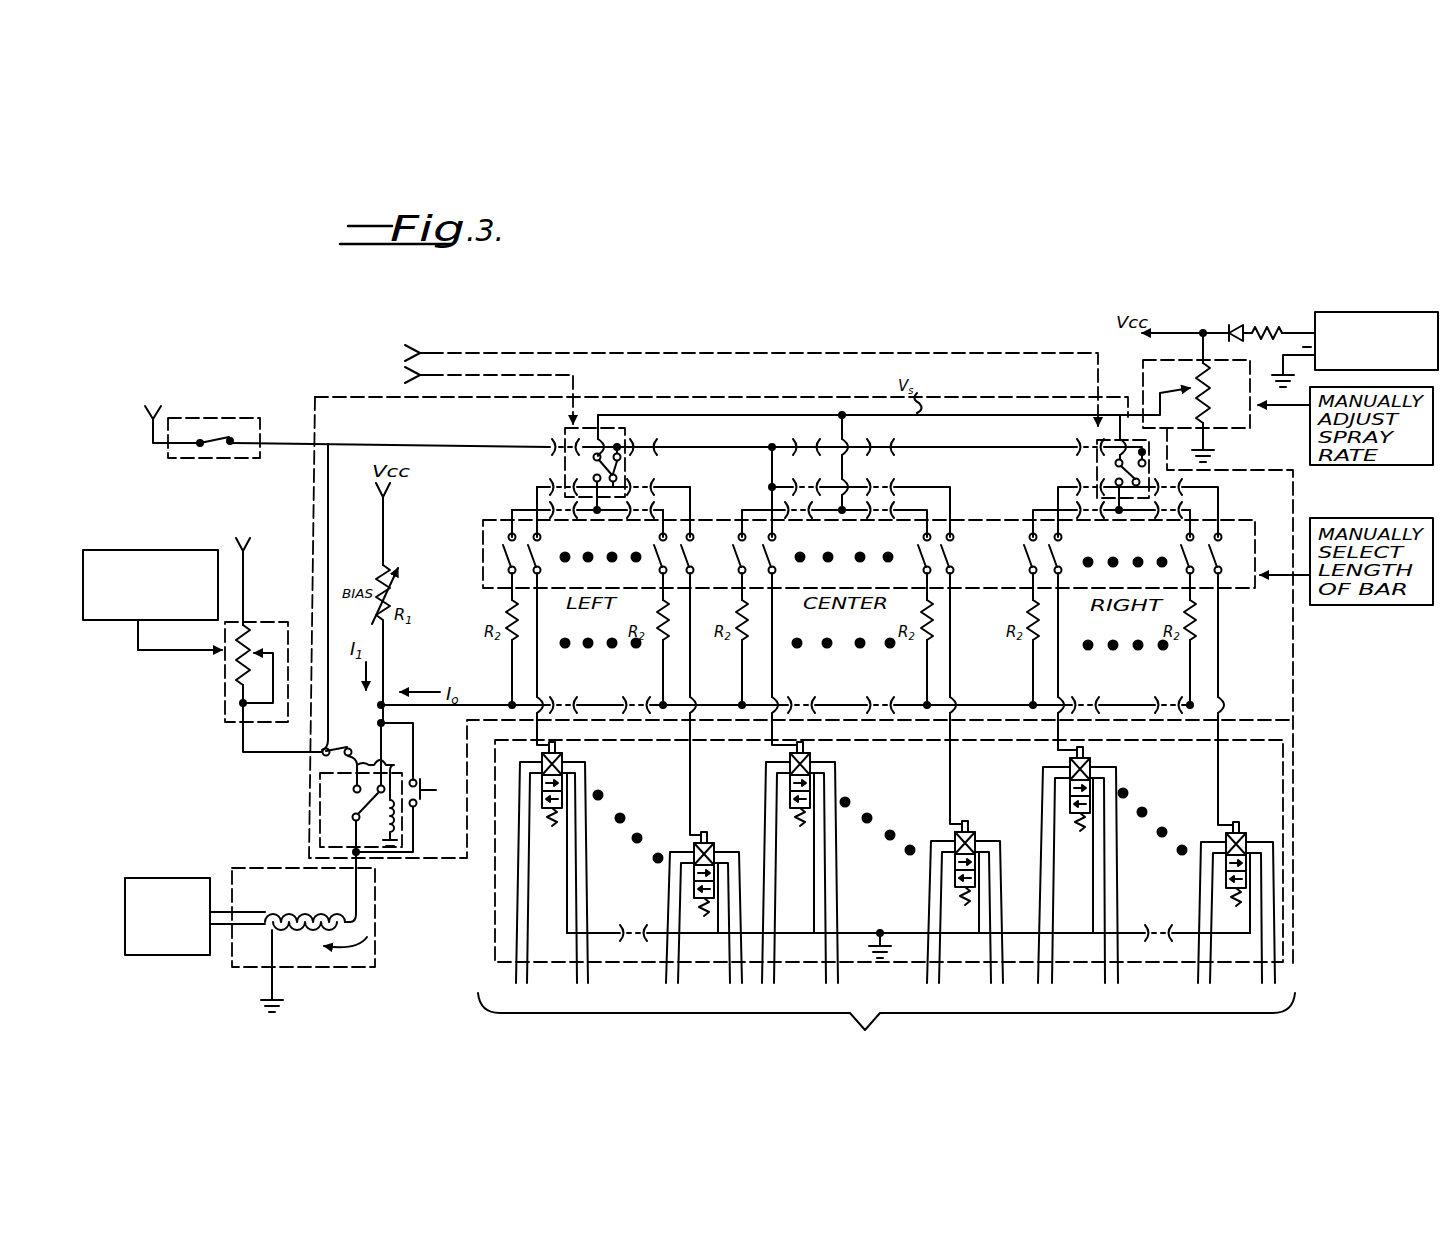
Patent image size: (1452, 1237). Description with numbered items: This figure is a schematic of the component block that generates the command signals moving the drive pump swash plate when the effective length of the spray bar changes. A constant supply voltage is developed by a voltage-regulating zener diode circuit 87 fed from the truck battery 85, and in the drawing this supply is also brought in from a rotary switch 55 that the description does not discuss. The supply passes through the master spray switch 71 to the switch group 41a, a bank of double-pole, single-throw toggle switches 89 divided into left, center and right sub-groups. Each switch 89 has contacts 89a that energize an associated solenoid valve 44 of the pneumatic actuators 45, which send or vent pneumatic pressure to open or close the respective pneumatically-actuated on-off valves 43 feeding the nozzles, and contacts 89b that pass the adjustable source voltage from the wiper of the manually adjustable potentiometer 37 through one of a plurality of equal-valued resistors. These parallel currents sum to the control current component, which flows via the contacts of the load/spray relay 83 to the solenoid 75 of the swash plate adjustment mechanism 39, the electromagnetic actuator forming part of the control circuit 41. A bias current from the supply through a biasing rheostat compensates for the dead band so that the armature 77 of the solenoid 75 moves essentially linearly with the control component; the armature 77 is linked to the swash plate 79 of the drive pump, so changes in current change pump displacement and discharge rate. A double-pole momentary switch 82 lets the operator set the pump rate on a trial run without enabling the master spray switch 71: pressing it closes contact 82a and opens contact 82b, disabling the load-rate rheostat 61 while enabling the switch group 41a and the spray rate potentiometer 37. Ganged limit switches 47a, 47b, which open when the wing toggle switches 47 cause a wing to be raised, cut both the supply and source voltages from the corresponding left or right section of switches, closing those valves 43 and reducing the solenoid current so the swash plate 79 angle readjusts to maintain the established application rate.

The rotary switch 55 is at (154, 378).
The toggle switches 47 is at (678, 371).
The master spray switch 71 is at (204, 440).
The rheostat 61 is at (279, 643).
The control circuit 41 is at (402, 866).
The switch group 41a is at (476, 573).
The double-pole momentary switch 82 is at (423, 820).
The contact 82a is at (438, 784).
The contact 82b is at (352, 745).
The load/spray relay 83 is at (319, 825).
The swash plate 79 is at (162, 880).
The armature 77 is at (252, 915).
The solenoid 75 is at (282, 913).
The swash plate adjustment mechanism 39 is at (322, 974).
The left limit switch 47a is at (625, 433).
The right limit switch 47b is at (1090, 444).
The double-pole toggle switch 89 is at (787, 559).
The switch contacts 89a is at (782, 560).
The switch contacts 89b is at (712, 558).
The manually adjustable potentiometer 37 is at (1145, 360).
The zener diode circuit 87 is at (1245, 328).
The truck battery 85 is at (1359, 312).
The pneumatic actuators 45 is at (1365, 832).
The solenoid valve 44 is at (548, 810).
The pneumatically-actuated on-off valve 43 is at (886, 1027).